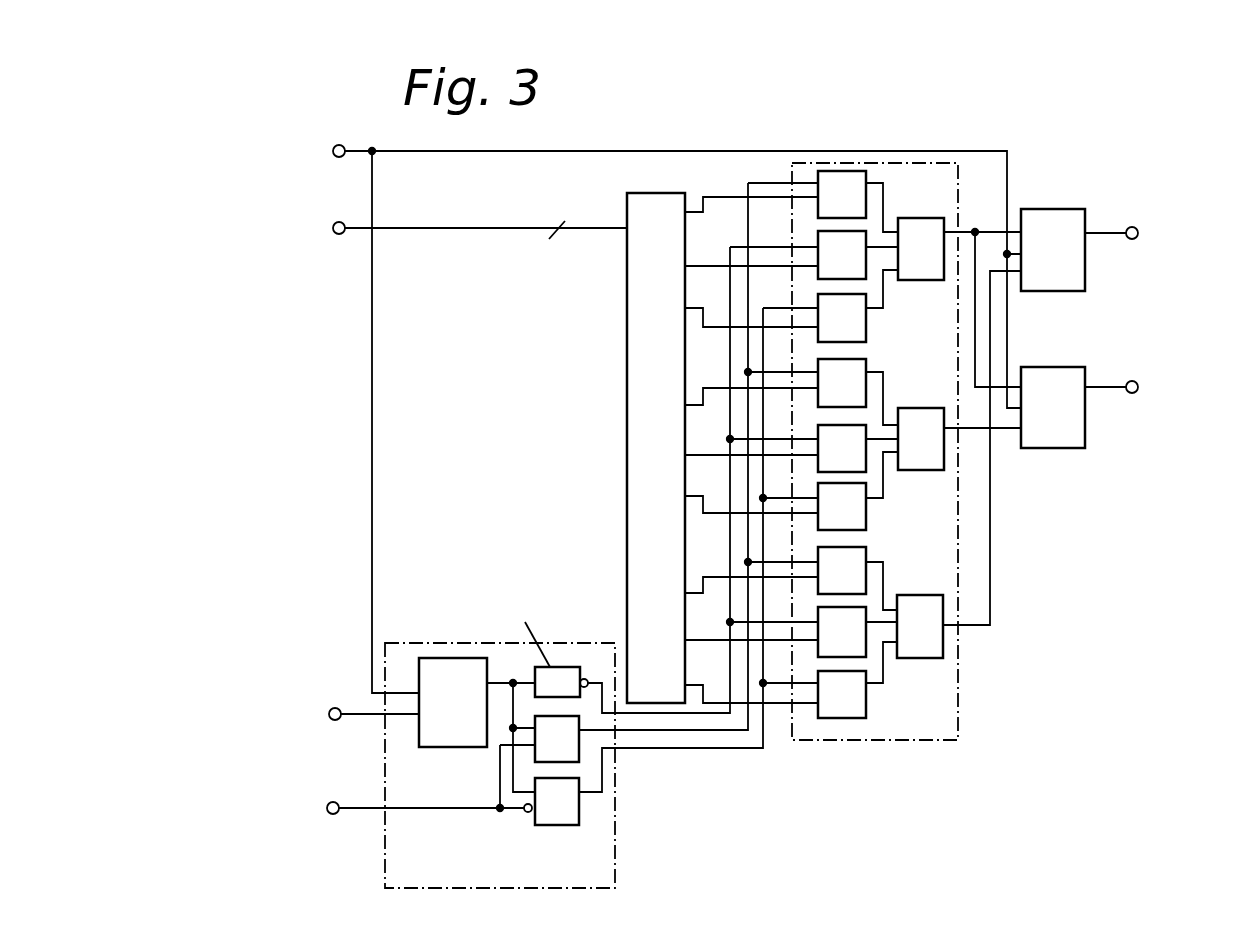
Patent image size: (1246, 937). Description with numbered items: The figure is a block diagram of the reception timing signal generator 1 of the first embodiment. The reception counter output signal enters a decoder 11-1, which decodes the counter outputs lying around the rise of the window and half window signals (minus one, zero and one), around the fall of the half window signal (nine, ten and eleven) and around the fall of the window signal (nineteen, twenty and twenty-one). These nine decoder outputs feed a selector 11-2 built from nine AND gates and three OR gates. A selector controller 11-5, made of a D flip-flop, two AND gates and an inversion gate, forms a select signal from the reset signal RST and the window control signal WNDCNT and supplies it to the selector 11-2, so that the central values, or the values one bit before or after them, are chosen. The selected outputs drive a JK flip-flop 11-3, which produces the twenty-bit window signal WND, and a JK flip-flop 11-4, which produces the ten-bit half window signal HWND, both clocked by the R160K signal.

The reception timing signal generator 1 is at (743, 151).
The decoder 11-1 is at (627, 415).
The selector 11-2 is at (890, 740).
The JK flip-flop 11-3 is at (1050, 209).
The JK flip-flop 11-4 is at (1050, 367).
The selector controller 11-5 is at (615, 770).